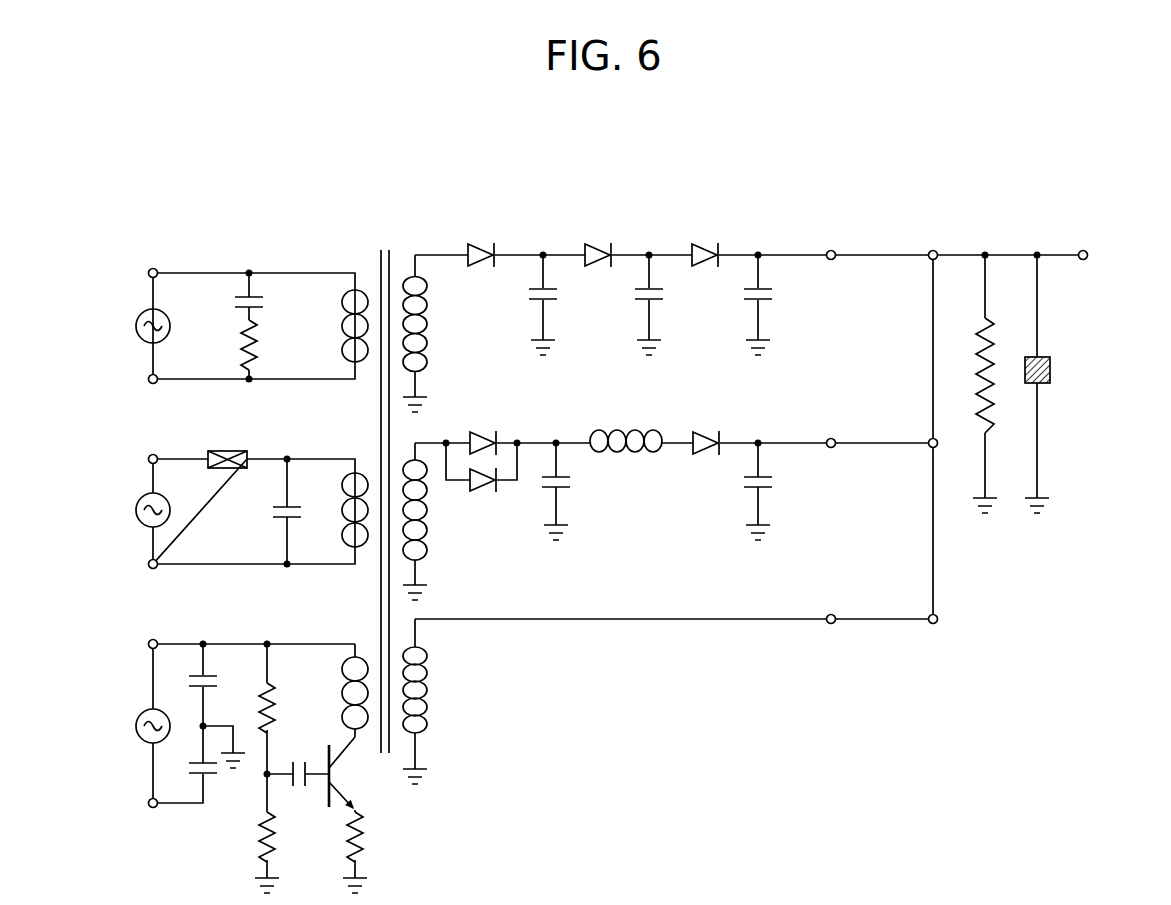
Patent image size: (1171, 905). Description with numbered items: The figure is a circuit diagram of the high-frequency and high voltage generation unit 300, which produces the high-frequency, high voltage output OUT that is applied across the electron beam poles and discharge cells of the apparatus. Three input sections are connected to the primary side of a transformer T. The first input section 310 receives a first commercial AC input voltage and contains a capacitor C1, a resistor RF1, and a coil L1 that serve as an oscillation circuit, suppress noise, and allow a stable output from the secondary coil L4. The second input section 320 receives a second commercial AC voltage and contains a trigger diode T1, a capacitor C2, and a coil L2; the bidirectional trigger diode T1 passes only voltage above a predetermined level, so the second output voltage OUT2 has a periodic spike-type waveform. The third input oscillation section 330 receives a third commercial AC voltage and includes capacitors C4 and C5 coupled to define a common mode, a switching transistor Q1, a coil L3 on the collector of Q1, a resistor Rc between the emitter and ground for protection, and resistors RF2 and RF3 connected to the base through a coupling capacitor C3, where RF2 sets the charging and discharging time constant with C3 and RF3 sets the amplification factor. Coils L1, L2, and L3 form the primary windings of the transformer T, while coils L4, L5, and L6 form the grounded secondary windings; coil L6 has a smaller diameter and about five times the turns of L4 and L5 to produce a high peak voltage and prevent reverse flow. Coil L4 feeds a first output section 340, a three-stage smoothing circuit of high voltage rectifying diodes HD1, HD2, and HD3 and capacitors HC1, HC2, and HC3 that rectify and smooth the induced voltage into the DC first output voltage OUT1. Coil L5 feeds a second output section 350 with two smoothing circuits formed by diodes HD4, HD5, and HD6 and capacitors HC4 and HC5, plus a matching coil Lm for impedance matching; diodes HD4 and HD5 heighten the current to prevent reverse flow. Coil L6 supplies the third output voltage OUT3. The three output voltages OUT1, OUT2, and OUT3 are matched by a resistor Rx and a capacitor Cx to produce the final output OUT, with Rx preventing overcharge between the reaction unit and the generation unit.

The high-frequency and high voltage generation unit 300 is at (712, 757).
The first input section 310 is at (219, 267).
The second input section 320 is at (272, 456).
The third input oscillation section 330 is at (258, 640).
The first output section 340 is at (847, 218).
The second output section 350 is at (826, 560).
The transformer T is at (377, 241).
The capacitor C1 is at (233, 296).
The resistor RF1 is at (269, 349).
The coil L1 is at (339, 326).
The trigger diode T1 is at (227, 446).
The capacitor C2 is at (271, 511).
The coil L2 is at (340, 510).
The capacitor C4 is at (216, 672).
The capacitor C5 is at (190, 771).
The resistor RF2 is at (287, 709).
The resistor RF3 is at (243, 833).
The capacitor C3 is at (298, 786).
The switching transistor Q1 is at (352, 773).
The coil L3 is at (340, 690).
The resistor Rc is at (371, 851).
The coil L4 is at (429, 333).
The coil L5 is at (429, 521).
The coil L6 is at (429, 701).
The rectifying diode HD1 is at (482, 243).
The rectifying diode HD2 is at (600, 243).
The rectifying diode HD3 is at (707, 243).
The rectifying diode HD4 is at (484, 426).
The rectifying diode HD5 is at (497, 496).
The rectifying diode HD6 is at (707, 426).
The capacitor HC1 is at (567, 305).
The capacitor HC2 is at (673, 305).
The capacitor HC3 is at (782, 305).
The capacitor HC4 is at (580, 491).
The capacitor HC5 is at (782, 491).
The matching coil Lm is at (626, 424).
The resistor Rx is at (970, 384).
The capacitor Cx is at (1055, 384).
The first output voltage OUT1 is at (882, 245).
The second output voltage OUT2 is at (882, 433).
The third output voltage OUT3 is at (882, 608).
The high-frequency and high voltage output OUT is at (1122, 256).